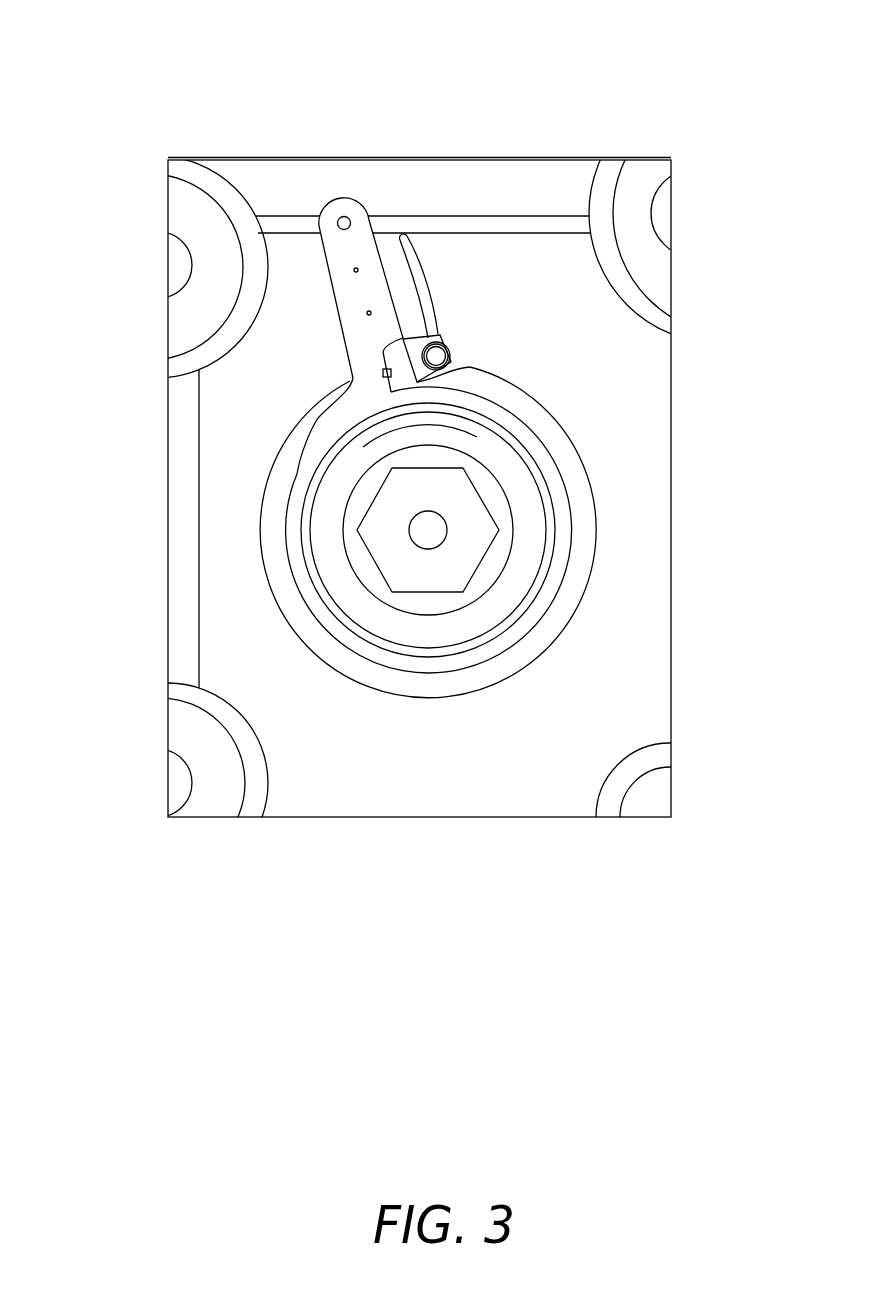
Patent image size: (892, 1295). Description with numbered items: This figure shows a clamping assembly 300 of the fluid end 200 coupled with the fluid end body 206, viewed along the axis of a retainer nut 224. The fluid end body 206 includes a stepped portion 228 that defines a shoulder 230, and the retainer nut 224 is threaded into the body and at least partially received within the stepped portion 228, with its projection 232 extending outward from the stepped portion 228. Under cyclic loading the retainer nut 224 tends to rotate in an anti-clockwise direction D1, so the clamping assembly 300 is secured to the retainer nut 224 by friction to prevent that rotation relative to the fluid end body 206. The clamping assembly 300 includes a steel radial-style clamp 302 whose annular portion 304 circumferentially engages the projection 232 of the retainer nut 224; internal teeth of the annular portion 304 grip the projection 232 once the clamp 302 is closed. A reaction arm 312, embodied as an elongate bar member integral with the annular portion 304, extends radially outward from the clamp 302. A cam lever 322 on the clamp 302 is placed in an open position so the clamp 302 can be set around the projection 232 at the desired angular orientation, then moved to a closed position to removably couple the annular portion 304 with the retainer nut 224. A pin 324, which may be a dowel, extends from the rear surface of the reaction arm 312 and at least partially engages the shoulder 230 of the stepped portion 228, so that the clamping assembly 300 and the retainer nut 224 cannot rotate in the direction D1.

The fluid end 200 is at (704, 28).
The fluid end body 206 is at (180, 396).
The retainer nut 224 is at (465, 525).
The stepped portion 228 is at (640, 482).
The shoulder 230 is at (577, 229).
The projection 232 is at (327, 525).
The clamping assembly 300 is at (539, 411).
The clamp 302 is at (563, 614).
The annular portion 304 is at (305, 583).
The reaction arm 312 is at (312, 288).
The cam lever 322 is at (433, 290).
The pin 324 is at (338, 224).
The direction D1 is at (351, 459).